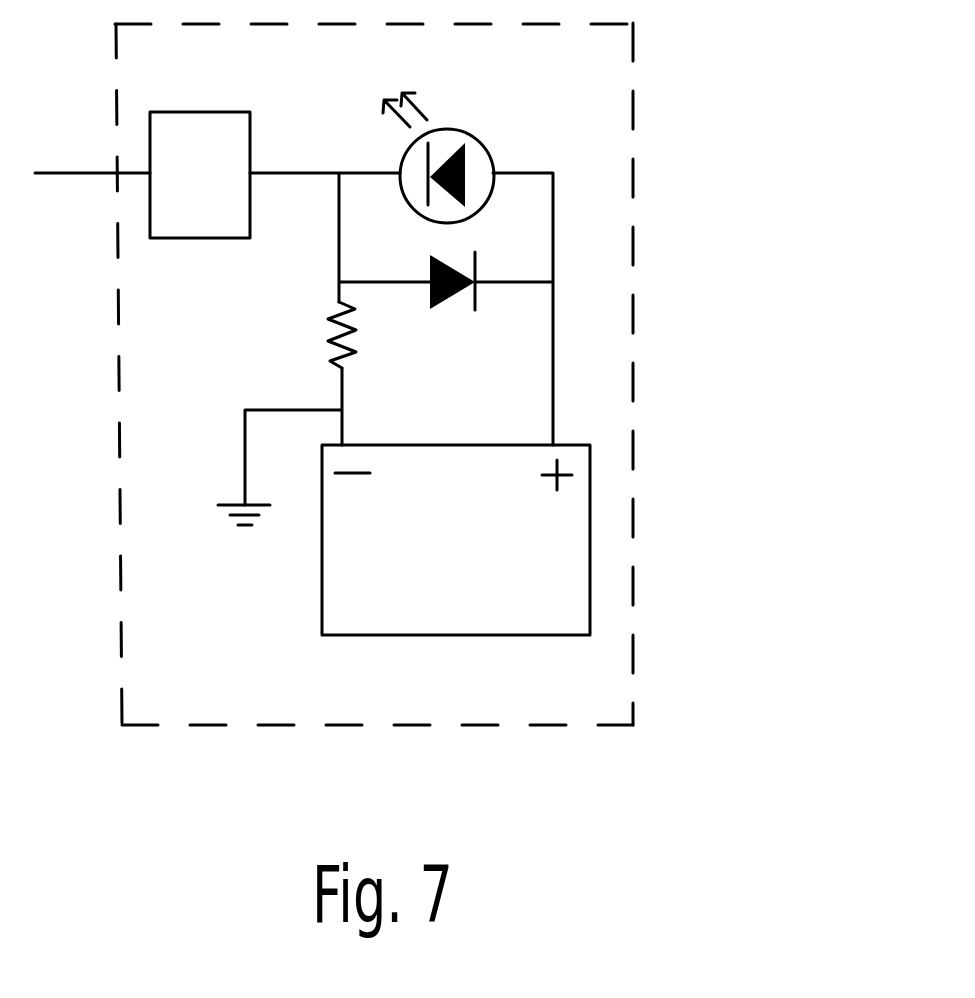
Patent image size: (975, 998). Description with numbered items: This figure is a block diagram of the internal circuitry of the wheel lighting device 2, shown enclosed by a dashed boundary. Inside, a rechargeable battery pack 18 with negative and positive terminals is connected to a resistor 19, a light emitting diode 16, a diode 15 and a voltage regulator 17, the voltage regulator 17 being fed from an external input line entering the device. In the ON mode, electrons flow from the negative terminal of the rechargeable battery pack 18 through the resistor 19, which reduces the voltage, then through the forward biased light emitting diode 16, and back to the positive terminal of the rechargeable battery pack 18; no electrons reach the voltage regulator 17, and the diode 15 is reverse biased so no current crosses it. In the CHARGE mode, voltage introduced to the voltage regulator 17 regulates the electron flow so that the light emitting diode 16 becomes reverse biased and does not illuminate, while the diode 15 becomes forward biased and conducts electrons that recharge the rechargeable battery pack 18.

The wheel lighting device 2 is at (652, 310).
The diode 15 is at (453, 310).
The light emitting diode 16 is at (482, 152).
The voltage regulator 17 is at (192, 132).
The rechargeable battery pack 18 is at (552, 567).
The resistor 19 is at (317, 330).